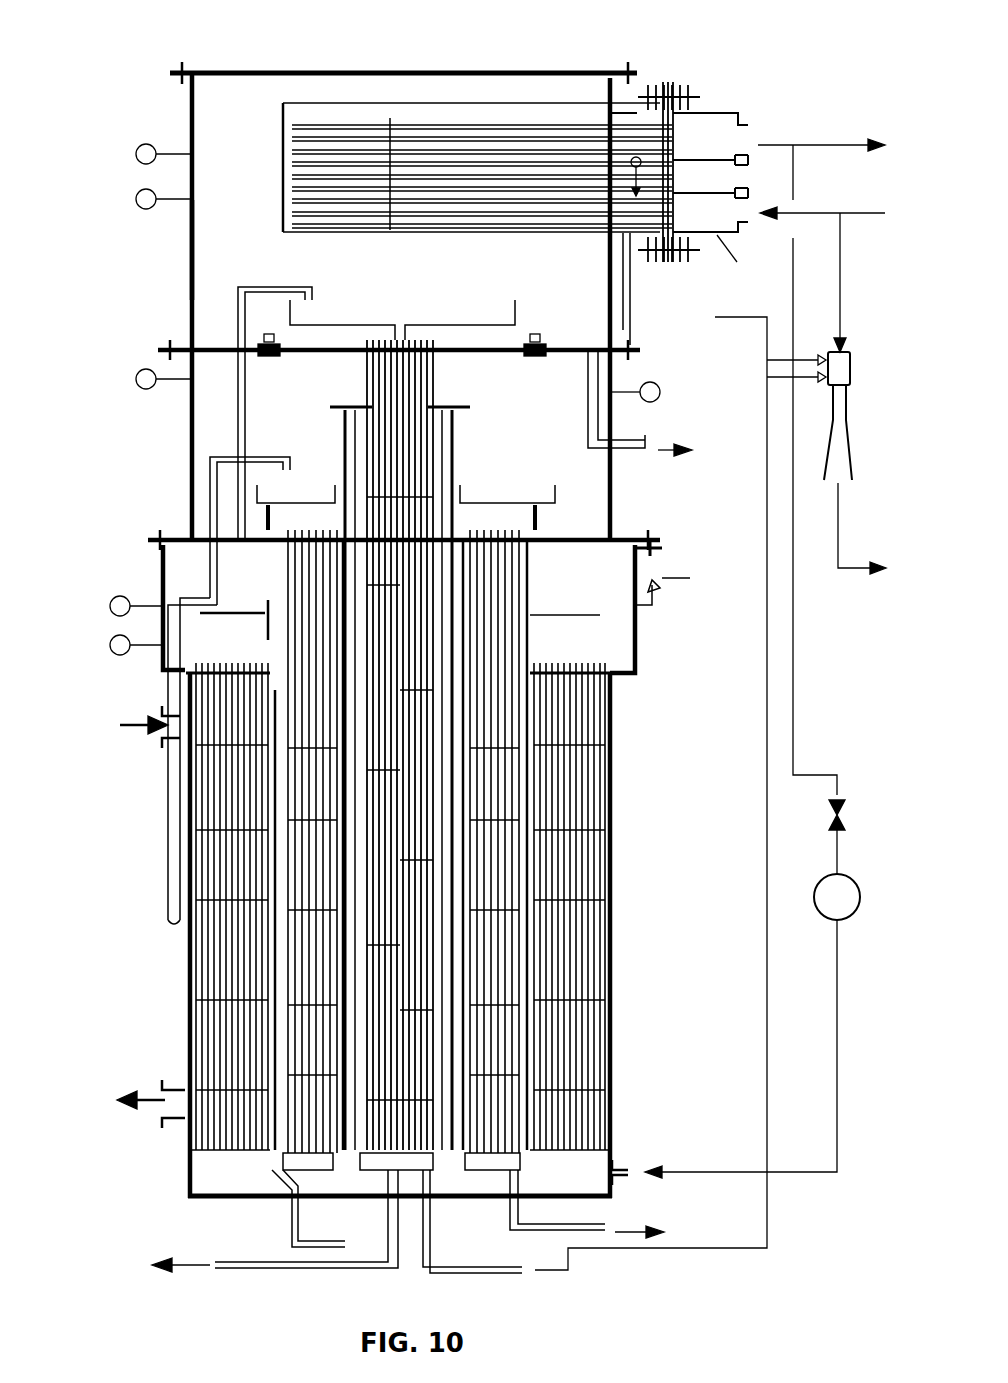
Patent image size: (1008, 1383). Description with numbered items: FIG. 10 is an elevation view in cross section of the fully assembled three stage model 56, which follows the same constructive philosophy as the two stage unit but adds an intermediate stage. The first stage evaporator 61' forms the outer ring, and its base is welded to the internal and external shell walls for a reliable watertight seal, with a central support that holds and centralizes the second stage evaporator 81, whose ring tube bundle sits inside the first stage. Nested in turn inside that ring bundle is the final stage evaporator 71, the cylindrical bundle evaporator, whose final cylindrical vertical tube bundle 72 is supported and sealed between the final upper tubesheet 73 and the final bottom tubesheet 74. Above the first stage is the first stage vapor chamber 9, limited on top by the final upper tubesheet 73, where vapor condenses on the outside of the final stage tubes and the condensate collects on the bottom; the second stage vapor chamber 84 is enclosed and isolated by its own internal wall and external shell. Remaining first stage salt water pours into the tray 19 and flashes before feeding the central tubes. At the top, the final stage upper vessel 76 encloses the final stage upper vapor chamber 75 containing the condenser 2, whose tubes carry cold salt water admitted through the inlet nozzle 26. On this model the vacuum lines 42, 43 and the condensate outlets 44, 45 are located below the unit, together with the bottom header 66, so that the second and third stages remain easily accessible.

The condenser 2 is at (418, 135).
The three stage model 56 is at (778, 86).
The inlet nozzle 26 is at (736, 261).
The final stage upper vapor chamber 75 is at (228, 245).
The final stage upper vessel 76 is at (190, 316).
The tray 19 is at (457, 323).
The final upper tubesheet 73 is at (510, 350).
The second stage vapor chamber 84 is at (555, 470).
The final stage evaporator 71 is at (367, 362).
The final cylindrical vertical tube bundle 72 is at (356, 440).
The second stage evaporator 81 is at (287, 553).
The first stage vapor chamber 9 is at (600, 592).
The first stage evaporator 61' is at (436, 864).
The bottom header 66 is at (232, 1172).
The vacuum line 42 is at (308, 1208).
The final bottom tubesheet 74 is at (397, 1153).
The condensate outlet 44 is at (161, 1274).
The vacuum line 43 is at (485, 1237).
The condensate outlet 45 is at (607, 1208).